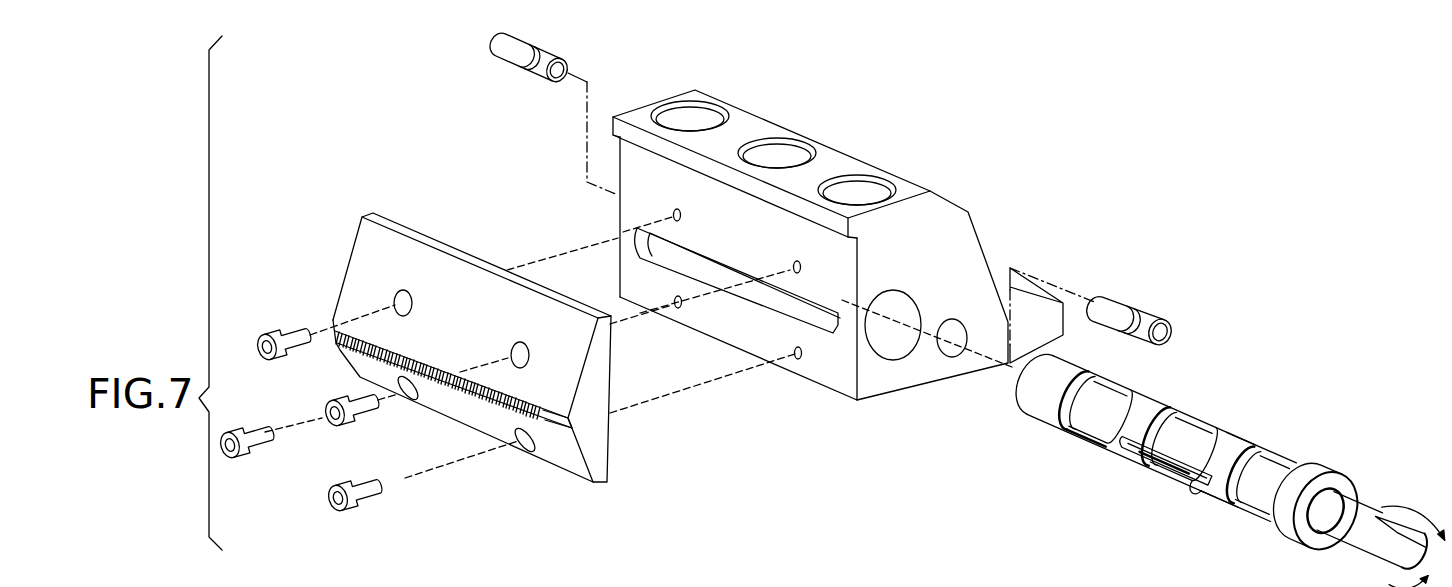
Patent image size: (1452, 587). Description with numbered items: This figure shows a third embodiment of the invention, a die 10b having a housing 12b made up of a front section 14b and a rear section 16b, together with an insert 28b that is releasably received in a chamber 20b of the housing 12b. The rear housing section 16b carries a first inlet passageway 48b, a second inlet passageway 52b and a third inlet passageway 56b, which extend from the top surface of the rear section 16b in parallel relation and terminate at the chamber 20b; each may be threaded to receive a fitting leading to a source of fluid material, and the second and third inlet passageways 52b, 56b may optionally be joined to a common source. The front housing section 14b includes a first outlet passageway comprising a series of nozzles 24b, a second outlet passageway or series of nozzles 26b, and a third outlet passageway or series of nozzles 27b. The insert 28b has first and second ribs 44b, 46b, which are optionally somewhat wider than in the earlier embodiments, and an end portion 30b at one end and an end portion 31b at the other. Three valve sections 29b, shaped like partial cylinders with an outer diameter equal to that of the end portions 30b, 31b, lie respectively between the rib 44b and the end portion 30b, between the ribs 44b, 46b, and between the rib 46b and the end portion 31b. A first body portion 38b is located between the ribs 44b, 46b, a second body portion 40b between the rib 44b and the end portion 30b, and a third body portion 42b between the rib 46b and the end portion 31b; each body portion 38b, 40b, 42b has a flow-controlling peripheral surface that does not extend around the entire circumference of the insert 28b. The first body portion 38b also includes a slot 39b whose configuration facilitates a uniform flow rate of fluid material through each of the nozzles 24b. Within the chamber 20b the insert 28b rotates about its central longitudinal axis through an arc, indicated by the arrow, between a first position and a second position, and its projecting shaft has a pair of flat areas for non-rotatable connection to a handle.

The die 10b is at (834, 308).
The housing 12b is at (777, 245).
The front section 14b is at (442, 347).
The rear section 16b is at (693, 235).
The chamber 20b is at (916, 370).
The nozzles 24b is at (453, 379).
The nozzles 26b is at (433, 401).
The nozzles 27b is at (546, 394).
The insert 28b is at (1380, 500).
The valve sections 29b is at (1108, 472).
The end portion 30b is at (1113, 467).
The end portion 31b is at (1315, 489).
The first body portion 38b is at (1199, 435).
The slot 39b is at (1183, 519).
The second body portion 40b is at (1115, 403).
The third body portion 42b is at (1256, 512).
The first rib 44b is at (1153, 466).
The second rib 46b is at (1019, 509).
The first inlet passageway 48b is at (777, 123).
The second inlet passageway 52b is at (690, 85).
The third inlet passageway 56b is at (857, 161).